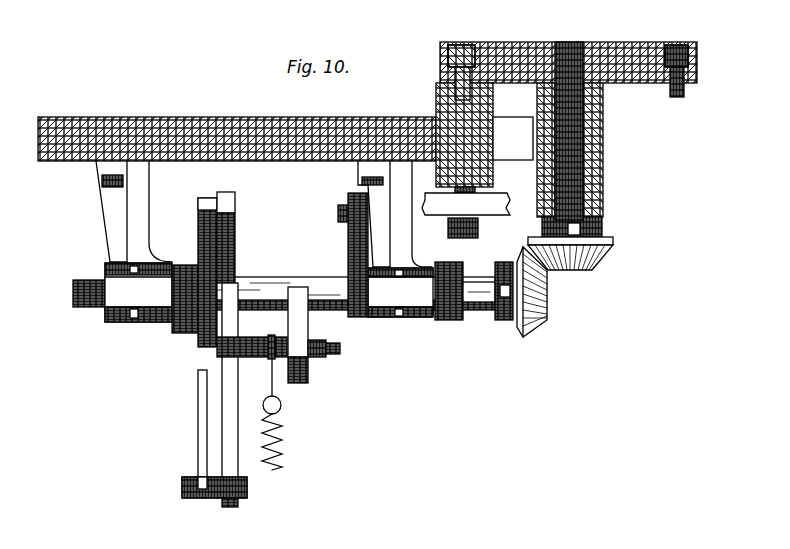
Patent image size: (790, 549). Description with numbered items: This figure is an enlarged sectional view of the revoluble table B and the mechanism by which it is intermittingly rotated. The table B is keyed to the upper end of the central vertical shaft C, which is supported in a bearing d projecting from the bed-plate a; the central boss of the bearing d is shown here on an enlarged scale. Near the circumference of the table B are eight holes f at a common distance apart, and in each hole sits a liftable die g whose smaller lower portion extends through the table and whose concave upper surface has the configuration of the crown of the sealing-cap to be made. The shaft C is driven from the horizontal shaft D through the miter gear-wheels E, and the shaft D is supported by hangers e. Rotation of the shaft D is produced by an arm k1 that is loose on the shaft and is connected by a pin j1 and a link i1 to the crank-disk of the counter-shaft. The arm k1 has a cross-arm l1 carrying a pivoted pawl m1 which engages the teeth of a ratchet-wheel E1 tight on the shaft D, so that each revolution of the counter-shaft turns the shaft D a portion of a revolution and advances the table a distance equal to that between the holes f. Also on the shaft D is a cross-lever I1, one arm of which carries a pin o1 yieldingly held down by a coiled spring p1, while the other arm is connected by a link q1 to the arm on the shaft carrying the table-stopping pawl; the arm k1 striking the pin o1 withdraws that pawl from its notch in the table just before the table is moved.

The bed-plate a is at (190, 117).
The revoluble table B is at (660, 83).
The central vertical shaft C is at (572, 45).
The bearing d is at (604, 186).
The holes f is at (680, 45).
The liftable die g is at (445, 65).
The hangers e is at (264, 214).
The miter gear-wheels E is at (562, 270).
The horizontal shaft D is at (470, 305).
The cross-lever I1 is at (353, 316).
The ratchet-wheel E1 is at (197, 338).
The pivoted pawl m1 is at (198, 236).
The cross-arm l1 is at (236, 256).
The link q1 is at (348, 231).
The pin o1 is at (240, 355).
The coiled spring p1 is at (283, 441).
The link i1 is at (198, 433).
The pin j1 is at (182, 487).
The arm k1 is at (240, 461).